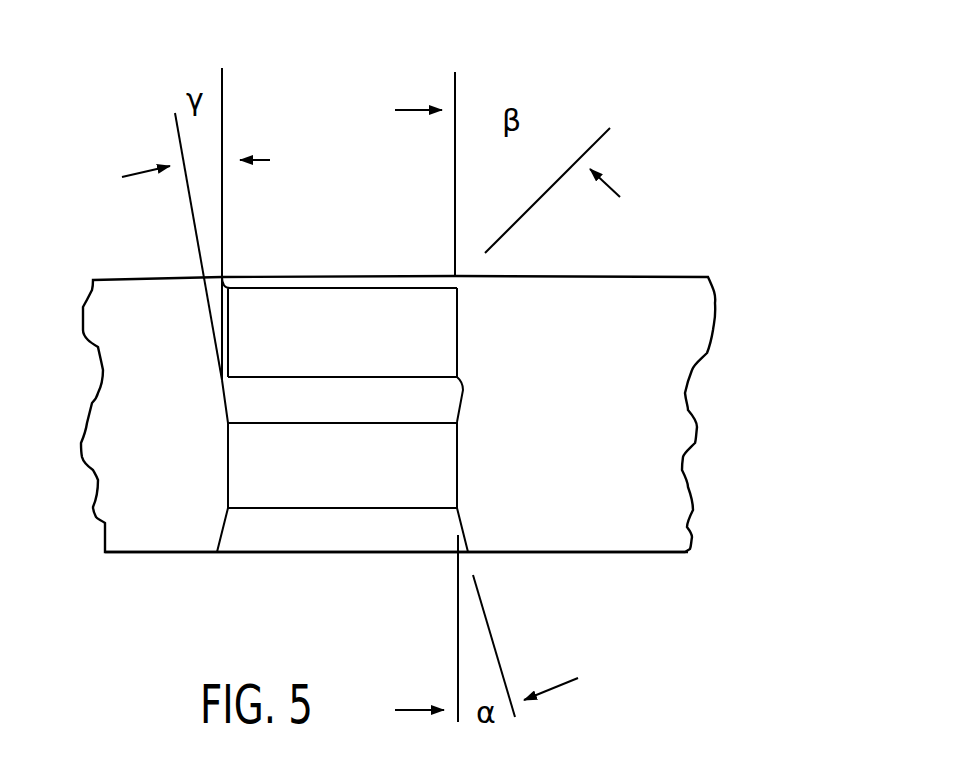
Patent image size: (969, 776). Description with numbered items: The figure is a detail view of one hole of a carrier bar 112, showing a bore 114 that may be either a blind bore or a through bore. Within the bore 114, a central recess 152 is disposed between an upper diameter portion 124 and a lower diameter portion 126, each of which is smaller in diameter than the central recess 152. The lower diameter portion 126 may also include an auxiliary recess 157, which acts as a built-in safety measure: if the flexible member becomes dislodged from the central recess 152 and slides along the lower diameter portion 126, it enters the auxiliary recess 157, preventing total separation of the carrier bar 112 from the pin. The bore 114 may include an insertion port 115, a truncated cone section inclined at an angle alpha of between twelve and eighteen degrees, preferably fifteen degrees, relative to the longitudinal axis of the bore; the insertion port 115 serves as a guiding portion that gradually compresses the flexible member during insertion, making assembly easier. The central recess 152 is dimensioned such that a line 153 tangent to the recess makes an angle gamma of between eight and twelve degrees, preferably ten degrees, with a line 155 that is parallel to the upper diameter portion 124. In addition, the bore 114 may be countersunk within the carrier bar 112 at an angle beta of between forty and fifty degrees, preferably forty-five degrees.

The carrier bar 112 is at (645, 342).
The bore 114 is at (361, 568).
The insertion port 115 is at (223, 530).
The upper diameter portion 124 is at (456, 327).
The lower diameter portion 126 is at (458, 442).
The central recess 152 is at (462, 395).
The tangent line 153 is at (180, 142).
The reference line 155 is at (222, 92).
The auxiliary recess 157 is at (228, 482).